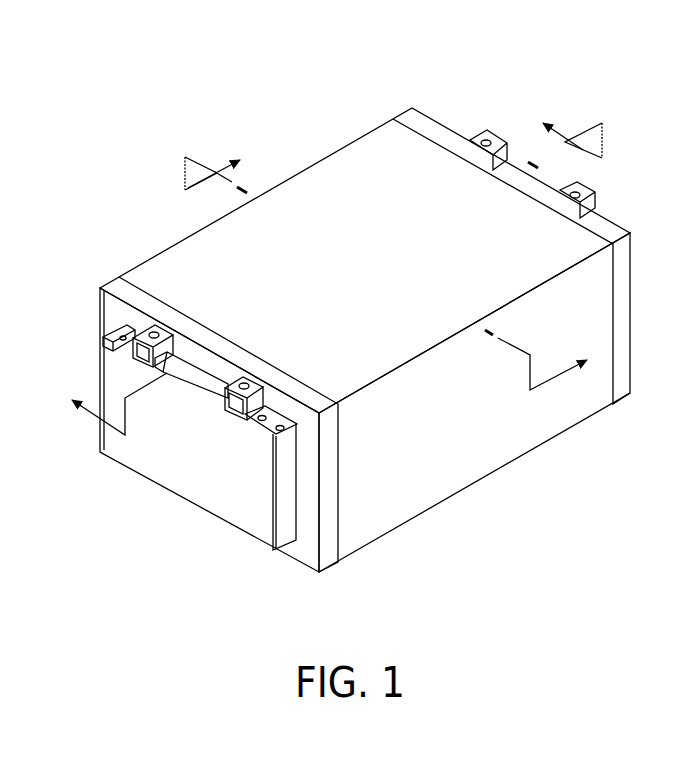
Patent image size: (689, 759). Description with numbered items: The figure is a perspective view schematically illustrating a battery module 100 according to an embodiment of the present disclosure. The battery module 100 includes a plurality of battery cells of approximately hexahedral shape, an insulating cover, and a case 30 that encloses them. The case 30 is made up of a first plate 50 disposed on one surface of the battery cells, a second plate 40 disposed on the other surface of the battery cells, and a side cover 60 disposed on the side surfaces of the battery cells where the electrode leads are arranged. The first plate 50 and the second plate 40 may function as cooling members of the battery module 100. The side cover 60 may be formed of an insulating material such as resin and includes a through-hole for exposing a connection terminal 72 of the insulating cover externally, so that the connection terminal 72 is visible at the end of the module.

The battery module 100 is at (297, 53).
The case 30 is at (643, 517).
The second plate 40 is at (442, 328).
The first plate 50 is at (478, 440).
The side cover 60 is at (622, 388).
The connection terminal 72 is at (257, 428).